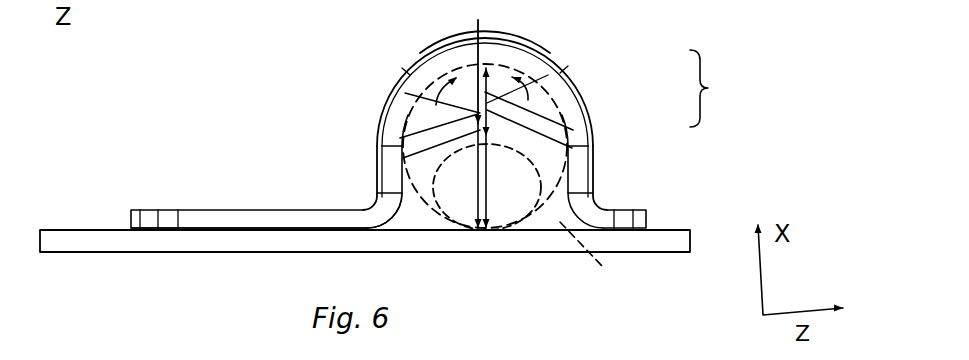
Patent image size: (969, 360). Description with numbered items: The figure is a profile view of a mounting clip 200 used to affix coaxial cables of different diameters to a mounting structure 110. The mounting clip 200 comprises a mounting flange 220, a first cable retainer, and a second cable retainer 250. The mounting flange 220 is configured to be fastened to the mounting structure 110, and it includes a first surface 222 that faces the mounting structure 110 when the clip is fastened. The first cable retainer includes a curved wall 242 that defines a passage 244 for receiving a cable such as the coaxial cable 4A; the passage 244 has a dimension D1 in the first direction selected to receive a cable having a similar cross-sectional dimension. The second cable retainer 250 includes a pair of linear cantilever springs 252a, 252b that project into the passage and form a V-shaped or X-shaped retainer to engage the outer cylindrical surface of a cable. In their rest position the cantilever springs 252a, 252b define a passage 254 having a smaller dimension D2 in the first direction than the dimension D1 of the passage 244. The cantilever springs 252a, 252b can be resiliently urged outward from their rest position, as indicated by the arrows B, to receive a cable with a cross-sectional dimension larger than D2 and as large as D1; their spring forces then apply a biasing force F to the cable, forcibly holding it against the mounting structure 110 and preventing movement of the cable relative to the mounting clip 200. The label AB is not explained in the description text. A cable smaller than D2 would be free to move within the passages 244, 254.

The mounting structure 110 is at (187, 243).
The mounting clip 200 is at (388, 90).
The mounting flange 220 is at (227, 210).
The first surface 222 is at (245, 232).
The curved wall 242 is at (530, 62).
The passage 244 is at (410, 213).
The second cable retainer 250 is at (584, 104).
The first cantilever spring 252a is at (553, 63).
The second cantilever spring 252b is at (548, 133).
The passage 254 is at (512, 215).
The coaxial cable 4A is at (603, 258).
The distance AB is at (402, 152).
The arrows B is at (478, 100).
The dimension D1 is at (473, 176).
The dimension D2 is at (502, 148).
The biasing force F is at (485, 62).